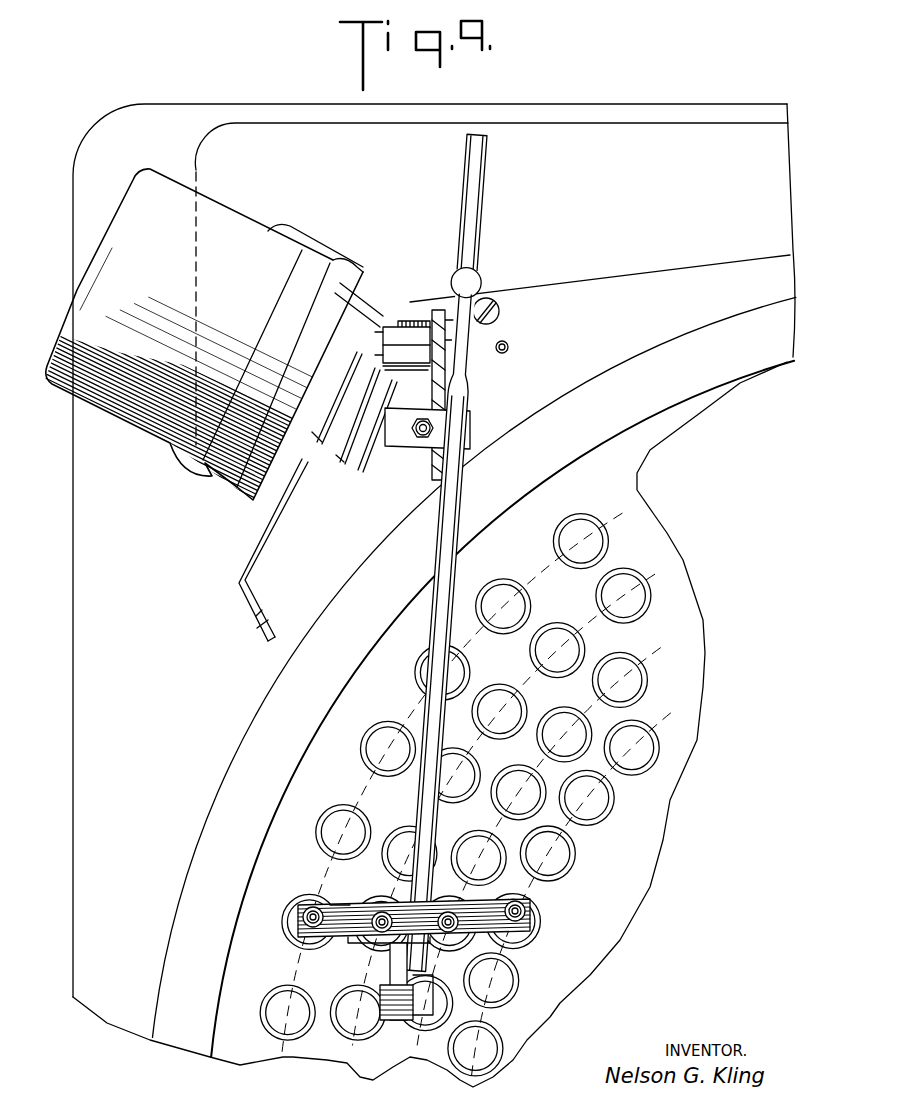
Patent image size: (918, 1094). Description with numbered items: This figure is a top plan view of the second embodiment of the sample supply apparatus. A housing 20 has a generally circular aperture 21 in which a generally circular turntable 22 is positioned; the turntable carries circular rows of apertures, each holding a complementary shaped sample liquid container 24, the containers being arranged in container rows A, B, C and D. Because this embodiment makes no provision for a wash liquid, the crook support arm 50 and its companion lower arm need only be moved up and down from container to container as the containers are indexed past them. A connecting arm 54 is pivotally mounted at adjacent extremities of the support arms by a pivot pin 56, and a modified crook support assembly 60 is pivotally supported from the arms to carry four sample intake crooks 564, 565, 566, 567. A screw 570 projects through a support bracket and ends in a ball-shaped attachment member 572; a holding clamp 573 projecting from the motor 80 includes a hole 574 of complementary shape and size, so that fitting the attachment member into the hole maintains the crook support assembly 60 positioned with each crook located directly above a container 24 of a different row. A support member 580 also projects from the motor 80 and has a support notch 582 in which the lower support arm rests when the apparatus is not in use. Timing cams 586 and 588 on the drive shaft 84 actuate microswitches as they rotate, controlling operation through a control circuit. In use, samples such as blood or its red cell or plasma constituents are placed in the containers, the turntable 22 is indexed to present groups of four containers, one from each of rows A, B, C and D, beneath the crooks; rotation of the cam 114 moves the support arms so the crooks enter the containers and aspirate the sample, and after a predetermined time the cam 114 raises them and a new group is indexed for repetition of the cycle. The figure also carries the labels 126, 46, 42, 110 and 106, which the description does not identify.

The housing 20 is at (73, 805).
The inner frame wall 126 is at (303, 122).
The aperture 21 is at (652, 347).
The turntable 22 is at (692, 388).
The sample liquid container 24 is at (575, 864).
The container row A is at (607, 519).
The container row B is at (645, 580).
The container row C is at (652, 655).
The container row D is at (666, 716).
The motor 80 is at (155, 178).
The holding clamp 573 is at (377, 297).
The ball-shaped attachment member 572 is at (402, 320).
The hole 574 is at (406, 348).
The motor shaft 46 is at (380, 347).
The screw 570 is at (472, 340).
The shaft 42 is at (400, 365).
The drive shaft 84 is at (358, 432).
The cam 114 is at (365, 467).
The timing cam 586 is at (320, 440).
The timing cam 588 is at (343, 460).
The mounting plate 110 is at (422, 440).
The bracket 106 is at (470, 417).
The crook support arm 50 is at (457, 503).
The support member 580 is at (236, 589).
The support notch 582 is at (260, 627).
The crook 564 is at (303, 907).
The crook support assembly 60 is at (338, 907).
The crook 565 is at (378, 913).
The crook 566 is at (442, 917).
The crook 567 is at (530, 910).
The connecting arm 54 is at (385, 973).
The pivot pin 56 is at (363, 1042).